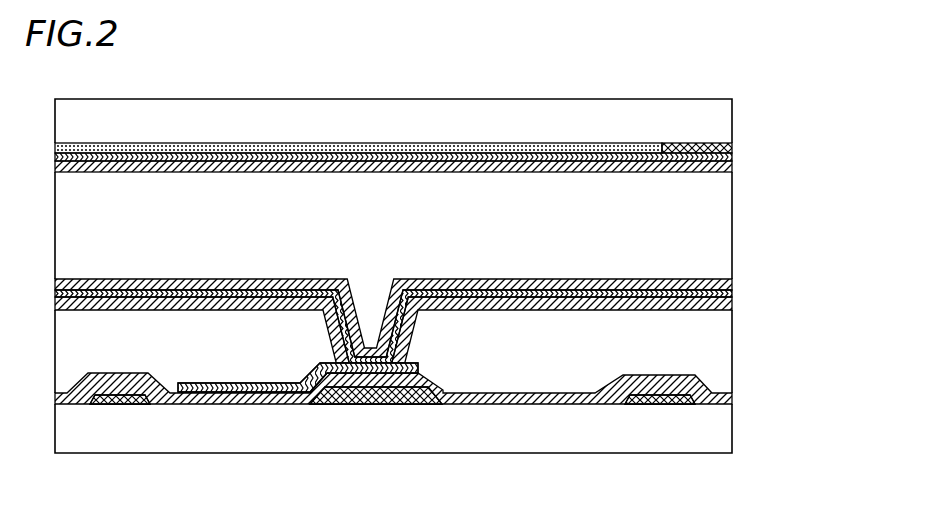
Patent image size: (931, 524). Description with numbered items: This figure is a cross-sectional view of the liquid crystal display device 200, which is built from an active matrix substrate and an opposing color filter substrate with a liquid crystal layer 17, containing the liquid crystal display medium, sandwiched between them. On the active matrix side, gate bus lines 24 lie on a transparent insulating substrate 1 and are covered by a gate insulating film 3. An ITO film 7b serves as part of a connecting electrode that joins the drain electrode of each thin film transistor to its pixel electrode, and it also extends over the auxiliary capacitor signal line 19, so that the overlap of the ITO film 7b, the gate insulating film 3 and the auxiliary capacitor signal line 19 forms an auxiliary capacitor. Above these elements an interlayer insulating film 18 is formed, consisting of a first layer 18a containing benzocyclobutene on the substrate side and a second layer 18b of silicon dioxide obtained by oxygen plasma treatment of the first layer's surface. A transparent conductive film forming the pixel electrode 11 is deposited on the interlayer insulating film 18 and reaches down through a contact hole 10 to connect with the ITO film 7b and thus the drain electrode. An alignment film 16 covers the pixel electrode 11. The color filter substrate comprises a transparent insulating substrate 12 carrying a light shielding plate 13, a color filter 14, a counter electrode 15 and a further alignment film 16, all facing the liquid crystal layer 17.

The liquid crystal display device 200 is at (739, 54).
The transparent insulating substrate 1 is at (484, 433).
The gate insulating film 3 is at (248, 405).
The ITO film 7b is at (289, 405).
The contact hole 10 is at (370, 288).
The pixel electrode 11 is at (567, 297).
The transparent insulating substrate 12 is at (412, 118).
The light shielding plate 13 is at (675, 143).
The color filter 14 is at (285, 143).
The counter electrode 15 is at (190, 143).
The alignment film 16 is at (732, 290).
The liquid crystal layer 17 is at (75, 211).
The interlayer insulating film 18 is at (807, 300).
The first layer 18a is at (720, 366).
The second layer 18b is at (732, 305).
The auxiliary capacitor signal line 19 is at (378, 405).
The gate bus line 24 is at (122, 405).